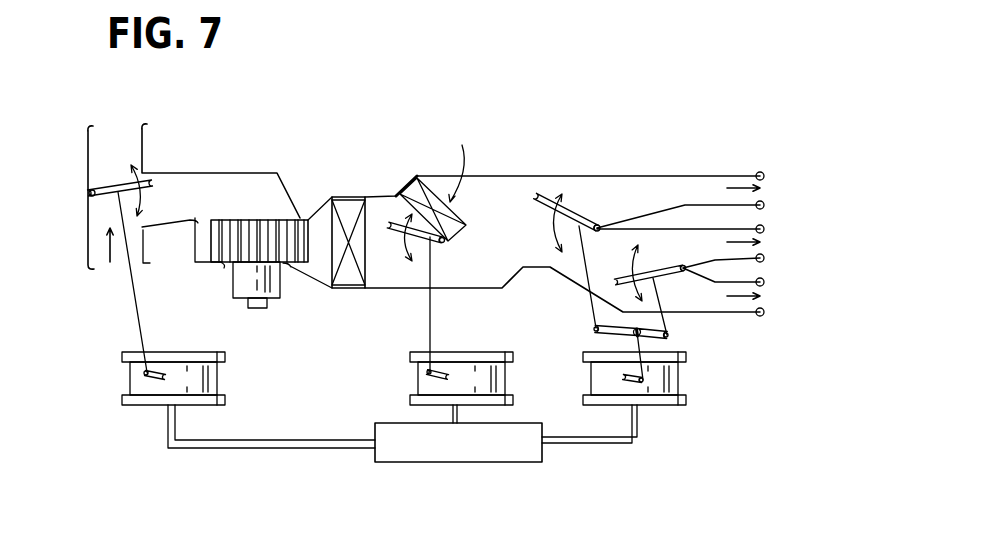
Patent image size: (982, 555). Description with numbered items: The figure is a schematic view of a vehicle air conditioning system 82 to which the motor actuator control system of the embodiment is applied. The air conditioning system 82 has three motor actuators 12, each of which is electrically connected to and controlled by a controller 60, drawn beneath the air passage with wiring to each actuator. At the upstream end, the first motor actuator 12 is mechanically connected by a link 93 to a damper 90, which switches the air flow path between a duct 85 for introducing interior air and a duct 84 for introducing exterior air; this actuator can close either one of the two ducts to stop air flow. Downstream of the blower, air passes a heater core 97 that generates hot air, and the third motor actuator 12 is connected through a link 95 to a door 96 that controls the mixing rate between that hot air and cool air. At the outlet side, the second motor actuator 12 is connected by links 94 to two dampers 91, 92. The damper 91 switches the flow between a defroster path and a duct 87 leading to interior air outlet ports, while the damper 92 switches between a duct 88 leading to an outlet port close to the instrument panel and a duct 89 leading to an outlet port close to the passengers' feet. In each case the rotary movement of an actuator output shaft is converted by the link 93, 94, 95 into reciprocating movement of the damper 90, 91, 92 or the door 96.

The air conditioning system 82 is at (598, 68).
The duct for introducing exterior air 84 is at (140, 147).
The duct for introducing interior air 85 is at (97, 247).
The duct leading to interior air outlet ports 87 is at (519, 176).
The duct leading to air outlet port close to instrument panel 88 is at (727, 235).
The duct leading to air outlet port close to passengers' feet 89 is at (707, 312).
The damper 90 is at (95, 188).
The damper 91 is at (573, 210).
The damper 92 is at (667, 267).
The link 93 is at (140, 330).
The links 94 is at (580, 319).
The link 95 is at (430, 318).
The door 96 is at (395, 226).
The heater core 97 is at (439, 180).
The motor actuator 12 is at (127, 418).
The controller 60 is at (458, 469).